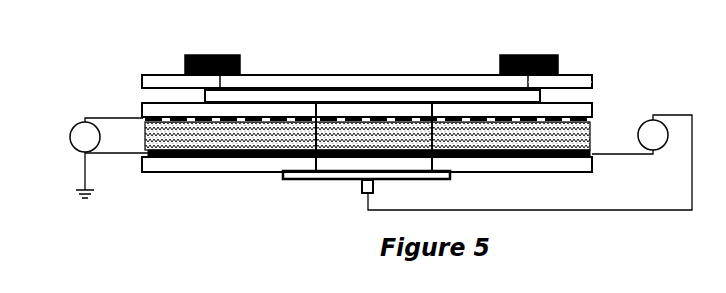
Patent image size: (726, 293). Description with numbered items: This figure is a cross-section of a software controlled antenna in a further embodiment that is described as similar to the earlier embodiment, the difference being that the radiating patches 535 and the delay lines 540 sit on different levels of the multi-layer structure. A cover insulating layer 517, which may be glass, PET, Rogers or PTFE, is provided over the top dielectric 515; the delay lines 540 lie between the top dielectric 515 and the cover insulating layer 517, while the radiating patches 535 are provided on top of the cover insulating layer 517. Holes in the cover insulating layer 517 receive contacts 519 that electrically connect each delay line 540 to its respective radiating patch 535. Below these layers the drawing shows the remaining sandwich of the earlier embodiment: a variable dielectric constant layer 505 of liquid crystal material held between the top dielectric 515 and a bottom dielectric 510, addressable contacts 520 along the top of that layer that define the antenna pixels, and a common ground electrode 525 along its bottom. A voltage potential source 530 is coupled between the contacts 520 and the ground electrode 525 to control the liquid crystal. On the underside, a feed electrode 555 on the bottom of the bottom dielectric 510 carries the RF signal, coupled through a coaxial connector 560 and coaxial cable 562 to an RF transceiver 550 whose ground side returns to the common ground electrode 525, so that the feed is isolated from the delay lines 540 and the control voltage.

The piezoelectric substrate layer 505 is at (265, 137).
The bottom support layer 510 is at (165, 162).
The top dielectric 515 is at (400, 108).
The cover insulating layer 517 is at (494, 78).
The contacts 519 is at (532, 82).
The electrode layer 520 is at (574, 115).
The bottom electrode 525 is at (243, 156).
The voltage source 530 is at (85, 120).
The radiating patches 535 is at (190, 56).
The delay lines 540 is at (322, 92).
The RF source 550 is at (651, 117).
The bottom bar 555 is at (347, 182).
The connector 560 is at (365, 195).
The connecting wire 562 is at (592, 212).